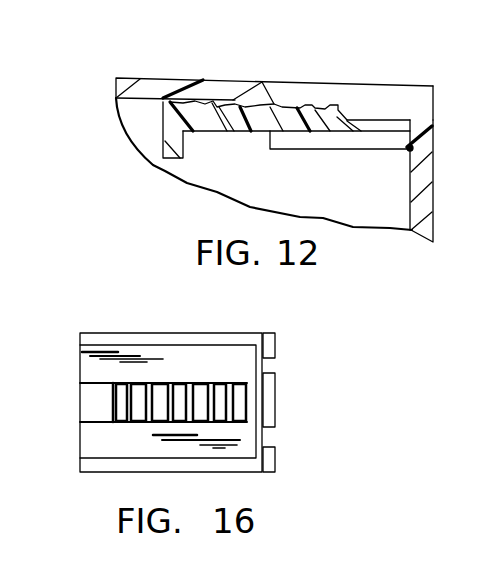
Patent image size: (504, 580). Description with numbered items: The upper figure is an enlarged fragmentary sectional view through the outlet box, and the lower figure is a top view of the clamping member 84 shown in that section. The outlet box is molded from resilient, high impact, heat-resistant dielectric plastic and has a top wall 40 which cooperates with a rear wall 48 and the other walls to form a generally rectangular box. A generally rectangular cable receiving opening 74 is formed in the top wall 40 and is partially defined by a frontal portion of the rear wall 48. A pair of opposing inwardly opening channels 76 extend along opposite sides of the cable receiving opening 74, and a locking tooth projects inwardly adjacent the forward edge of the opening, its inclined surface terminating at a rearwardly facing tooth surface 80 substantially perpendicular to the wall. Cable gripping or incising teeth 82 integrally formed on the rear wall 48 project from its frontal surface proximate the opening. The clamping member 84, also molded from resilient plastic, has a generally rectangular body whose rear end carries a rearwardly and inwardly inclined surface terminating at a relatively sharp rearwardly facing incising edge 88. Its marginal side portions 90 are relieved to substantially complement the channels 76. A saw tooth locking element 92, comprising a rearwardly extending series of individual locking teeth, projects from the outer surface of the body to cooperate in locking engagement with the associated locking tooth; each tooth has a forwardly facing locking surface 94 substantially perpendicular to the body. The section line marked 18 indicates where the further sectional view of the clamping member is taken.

In FIG. 12, the top wall 40 is at (188, 80).
In FIG. 12, the cable receiving opening 74 is at (407, 102).
In FIG. 12, the channel 76 is at (363, 126).
In FIG. 12, the tooth surface 80 is at (280, 103).
In FIG. 12, the cable gripping or incising teeth 82 is at (411, 146).
In FIG. 12, the clamping member 84 is at (231, 121).
In FIG. 16, the clamping member 84 is at (99, 478).
In FIG. 12, the rear wall 48 is at (424, 151).
In FIG. 16, the incising edge 88 is at (276, 427).
In FIG. 16, the marginal side portions 90 is at (135, 340).
In FIG. 16, the saw tooth locking element 92 is at (136, 406).
In FIG. 16, the locking surface 94 is at (226, 410).
In FIG. 16, the section line 18- 18 is at (95, 403).